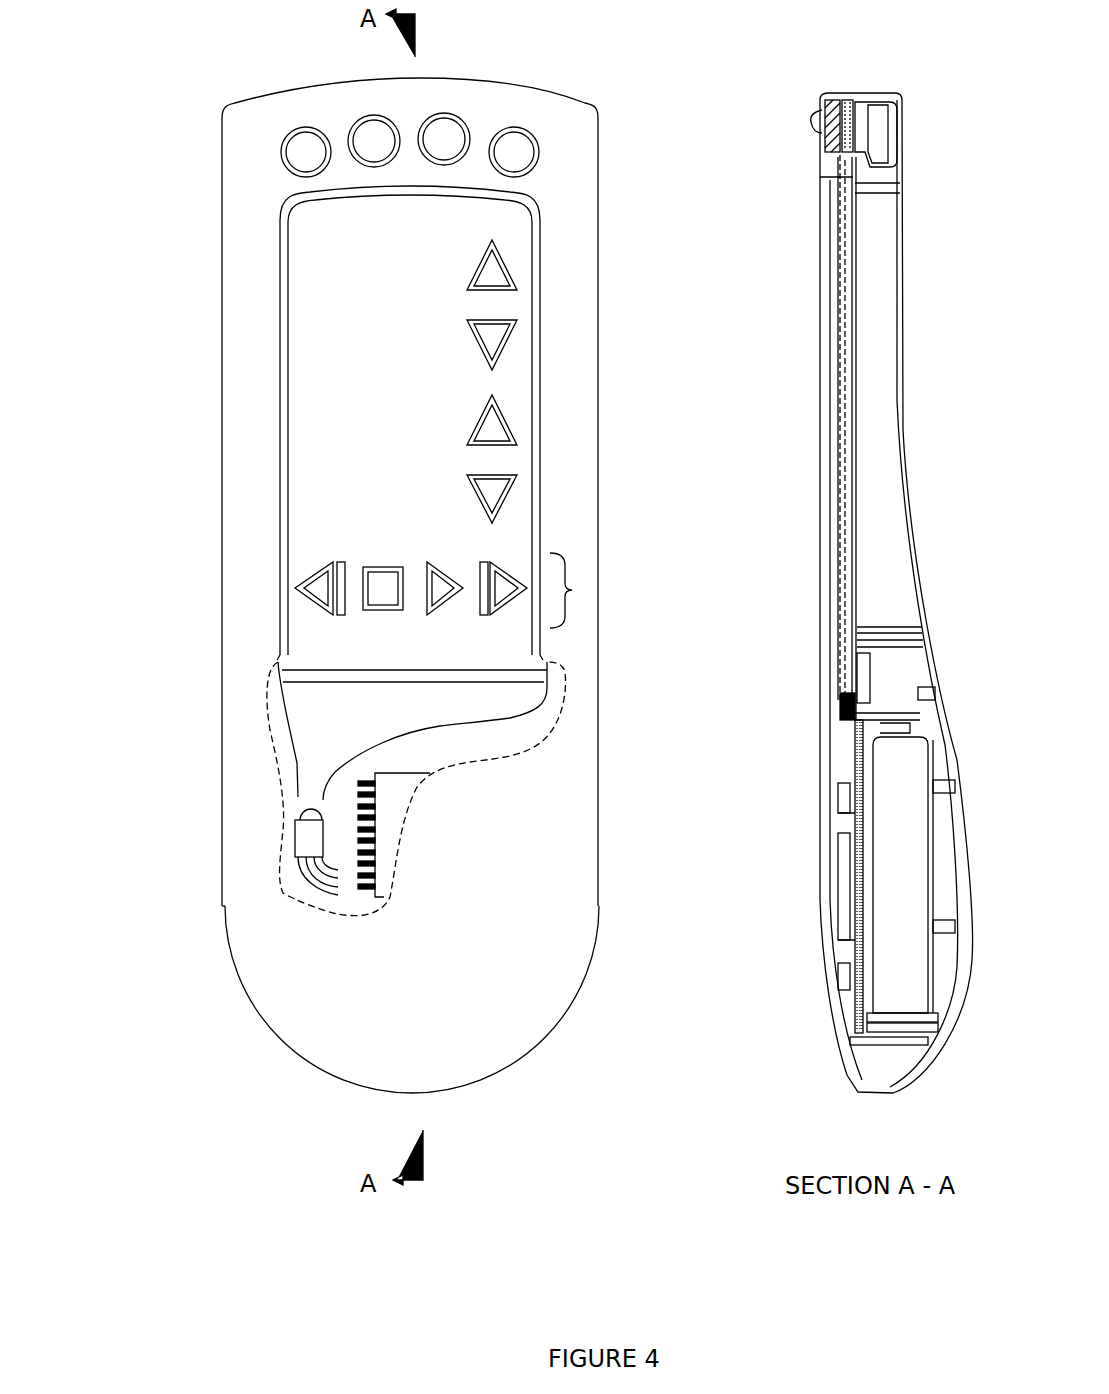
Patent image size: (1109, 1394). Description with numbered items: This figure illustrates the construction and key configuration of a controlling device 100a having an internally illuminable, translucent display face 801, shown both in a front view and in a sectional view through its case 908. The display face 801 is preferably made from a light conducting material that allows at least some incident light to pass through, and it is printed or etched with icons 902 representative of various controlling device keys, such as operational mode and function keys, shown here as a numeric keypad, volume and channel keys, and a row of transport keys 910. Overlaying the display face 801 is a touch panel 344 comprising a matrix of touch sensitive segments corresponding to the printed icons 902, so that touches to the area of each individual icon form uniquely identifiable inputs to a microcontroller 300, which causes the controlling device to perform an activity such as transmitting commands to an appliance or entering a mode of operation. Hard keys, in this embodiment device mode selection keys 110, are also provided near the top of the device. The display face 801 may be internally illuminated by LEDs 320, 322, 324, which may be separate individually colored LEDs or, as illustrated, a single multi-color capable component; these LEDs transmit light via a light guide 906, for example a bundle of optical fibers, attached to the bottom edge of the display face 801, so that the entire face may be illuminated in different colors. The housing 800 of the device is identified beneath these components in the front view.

The controlling device 100a is at (668, 1252).
The device mode selection keys 110 is at (303, 127).
The housing 800 is at (433, 999).
The display face 801 is at (840, 215).
The touch panel 344 is at (520, 342).
The case 908 is at (598, 407).
The icons 902 is at (310, 565).
The playback control keys 910 is at (573, 588).
The light guide 906 is at (840, 706).
The microcontroller 300 is at (392, 788).
The LED 320 is at (227, 911).
The LED 322 is at (227, 935).
The LED 324 is at (219, 901).